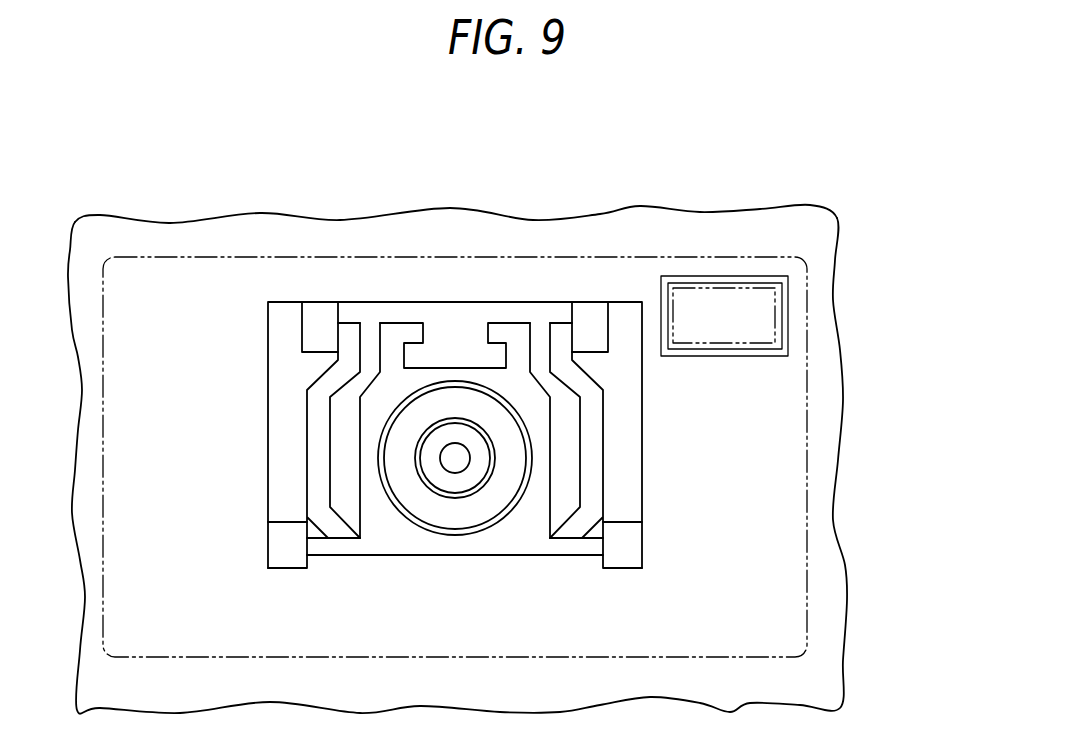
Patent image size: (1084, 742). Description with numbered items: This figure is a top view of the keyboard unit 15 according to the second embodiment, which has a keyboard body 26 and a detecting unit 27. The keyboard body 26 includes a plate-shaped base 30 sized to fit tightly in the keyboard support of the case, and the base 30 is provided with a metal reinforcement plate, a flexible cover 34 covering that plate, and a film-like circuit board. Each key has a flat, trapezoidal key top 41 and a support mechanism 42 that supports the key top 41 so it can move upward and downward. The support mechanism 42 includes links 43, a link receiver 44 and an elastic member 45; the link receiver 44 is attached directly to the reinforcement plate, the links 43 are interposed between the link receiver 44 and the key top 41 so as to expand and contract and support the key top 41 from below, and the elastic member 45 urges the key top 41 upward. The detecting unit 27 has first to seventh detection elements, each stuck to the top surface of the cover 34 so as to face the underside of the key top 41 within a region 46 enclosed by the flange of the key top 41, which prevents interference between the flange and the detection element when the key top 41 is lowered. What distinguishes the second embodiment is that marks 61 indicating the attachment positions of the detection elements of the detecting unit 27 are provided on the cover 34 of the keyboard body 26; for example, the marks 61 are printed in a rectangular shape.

The keyboard unit 15 is at (890, 240).
The keyboard body 26 is at (575, 232).
The detecting unit 27 is at (715, 284).
The base 30 is at (842, 466).
The cover 34 is at (770, 377).
The key top 41 is at (808, 563).
The support mechanism 42 is at (397, 536).
The links 43 is at (383, 412).
The link receiver 44 is at (283, 347).
The elastic member 45 is at (482, 507).
The region 46 is at (788, 622).
The marks 61 is at (787, 315).